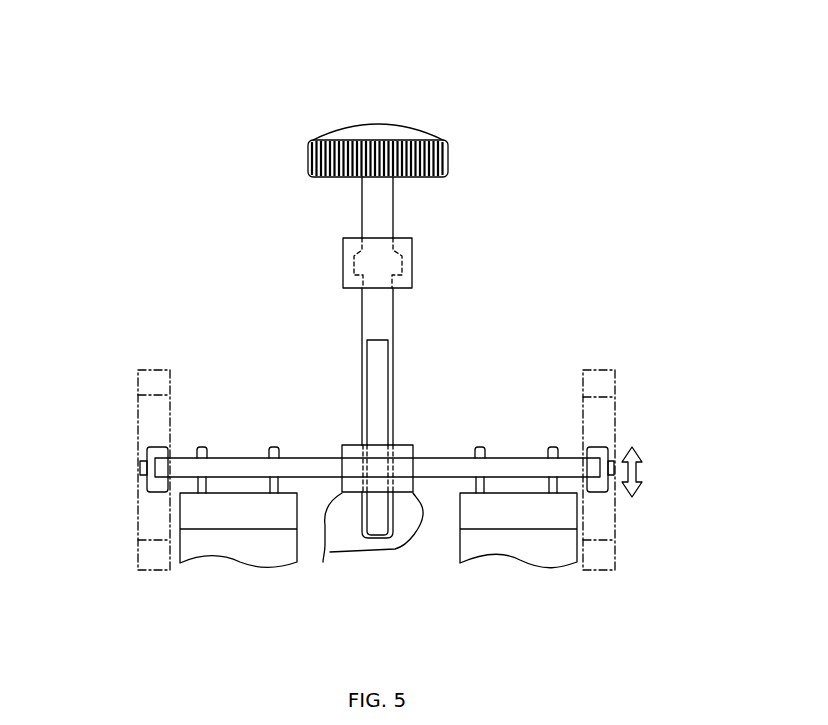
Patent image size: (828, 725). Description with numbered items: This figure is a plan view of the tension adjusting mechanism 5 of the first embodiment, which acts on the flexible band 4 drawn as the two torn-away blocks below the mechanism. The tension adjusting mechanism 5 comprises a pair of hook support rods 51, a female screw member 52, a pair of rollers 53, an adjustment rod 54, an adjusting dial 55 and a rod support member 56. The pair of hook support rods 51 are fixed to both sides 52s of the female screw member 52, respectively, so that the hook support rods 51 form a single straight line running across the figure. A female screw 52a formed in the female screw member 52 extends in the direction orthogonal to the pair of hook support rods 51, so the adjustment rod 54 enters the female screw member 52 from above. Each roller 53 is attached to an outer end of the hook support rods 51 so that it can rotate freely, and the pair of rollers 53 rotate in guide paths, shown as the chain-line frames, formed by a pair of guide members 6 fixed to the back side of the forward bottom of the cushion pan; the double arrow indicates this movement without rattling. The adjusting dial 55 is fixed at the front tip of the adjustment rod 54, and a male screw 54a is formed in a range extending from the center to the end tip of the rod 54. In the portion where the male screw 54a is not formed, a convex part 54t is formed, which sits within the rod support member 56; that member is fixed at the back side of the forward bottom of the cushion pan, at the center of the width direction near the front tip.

The flexible band 4 is at (270, 563).
The tension adjusting mechanism 5 is at (548, 193).
The guide member 6 is at (138, 515).
The hook support rod 51 is at (322, 460).
The female screw member 52 is at (407, 445).
The female screw 52a is at (368, 456).
The both sides of the female screw member 52s is at (362, 539).
The roller 53 is at (158, 447).
The adjustment rod 54 is at (390, 212).
The male screw 54a is at (362, 360).
The convex part 54t is at (359, 260).
The adjusting dial 55 is at (432, 133).
The rod support member 56 is at (412, 263).